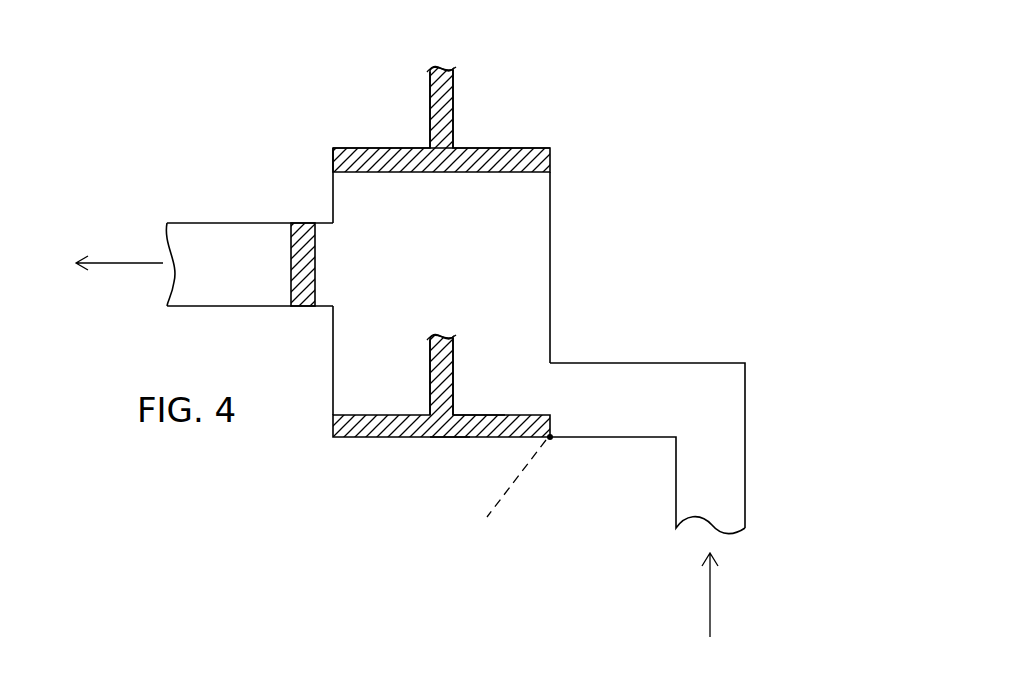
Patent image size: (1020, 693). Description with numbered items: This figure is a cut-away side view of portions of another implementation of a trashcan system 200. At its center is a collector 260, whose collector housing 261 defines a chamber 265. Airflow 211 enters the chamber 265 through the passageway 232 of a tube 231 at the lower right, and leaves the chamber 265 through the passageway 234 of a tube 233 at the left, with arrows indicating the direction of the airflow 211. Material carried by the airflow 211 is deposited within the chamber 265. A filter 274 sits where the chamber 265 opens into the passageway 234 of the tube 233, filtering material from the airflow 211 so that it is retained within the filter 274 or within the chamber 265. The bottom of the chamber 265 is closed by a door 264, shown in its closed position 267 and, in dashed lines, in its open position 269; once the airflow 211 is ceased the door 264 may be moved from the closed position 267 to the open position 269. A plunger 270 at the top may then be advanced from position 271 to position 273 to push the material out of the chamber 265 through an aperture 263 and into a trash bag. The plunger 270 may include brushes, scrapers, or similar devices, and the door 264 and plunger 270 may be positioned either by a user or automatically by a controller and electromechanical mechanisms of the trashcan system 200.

The trashcan system 200 is at (748, 132).
The airflow 211 is at (128, 263).
The tube 231 is at (745, 399).
The passageway 232 is at (730, 475).
The tube 233 is at (210, 223).
The passageway 234 is at (259, 275).
The collector 260 is at (550, 182).
The collector housing 261 is at (550, 204).
The aperture 263 is at (450, 440).
The door 264 is at (373, 437).
The chamber 265 is at (460, 245).
The closed position 267 is at (425, 437).
The open position 269 is at (528, 463).
The plunger 270 is at (470, 148).
The position 271 is at (510, 148).
The position 273 is at (505, 415).
The filter 274 is at (333, 248).